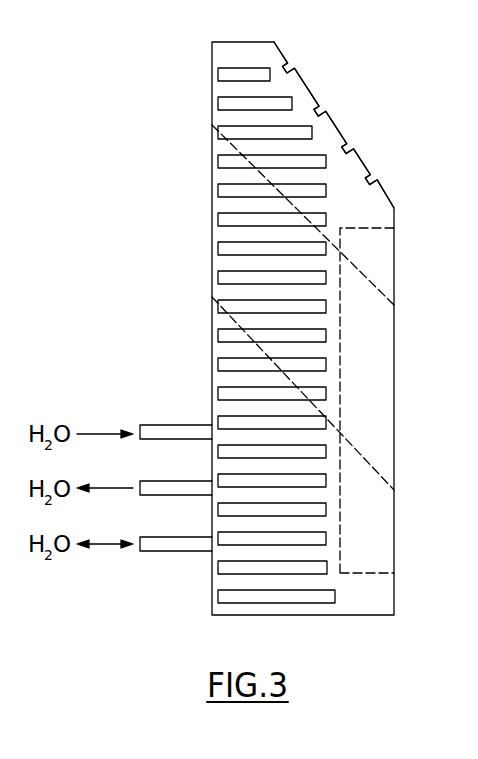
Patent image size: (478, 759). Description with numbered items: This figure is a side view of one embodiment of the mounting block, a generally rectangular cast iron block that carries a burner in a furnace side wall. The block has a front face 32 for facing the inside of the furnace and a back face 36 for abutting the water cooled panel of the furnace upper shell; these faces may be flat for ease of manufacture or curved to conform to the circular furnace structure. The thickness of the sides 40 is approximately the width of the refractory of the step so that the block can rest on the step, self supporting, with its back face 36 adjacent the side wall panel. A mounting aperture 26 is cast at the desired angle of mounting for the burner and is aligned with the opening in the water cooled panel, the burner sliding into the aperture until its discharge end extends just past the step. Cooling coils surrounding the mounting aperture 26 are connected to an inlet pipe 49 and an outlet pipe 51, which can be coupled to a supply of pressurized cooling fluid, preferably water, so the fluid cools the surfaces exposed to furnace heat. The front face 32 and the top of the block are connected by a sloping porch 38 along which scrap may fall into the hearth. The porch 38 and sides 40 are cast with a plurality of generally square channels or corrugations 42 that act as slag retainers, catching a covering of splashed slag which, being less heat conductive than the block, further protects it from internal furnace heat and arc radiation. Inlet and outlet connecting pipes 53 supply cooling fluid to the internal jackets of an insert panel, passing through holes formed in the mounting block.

The mounting aperture 26 is at (212, 212).
The front face 32 is at (394, 232).
The back face 36 is at (212, 352).
The sloping porch 38 is at (378, 150).
The sides 40 is at (353, 552).
The channels or corrugations 42 is at (292, 73).
The inlet pipe 49 is at (150, 425).
The outlet pipe 51 is at (150, 481).
The inlet and outlet connecting pipes 53 is at (170, 551).